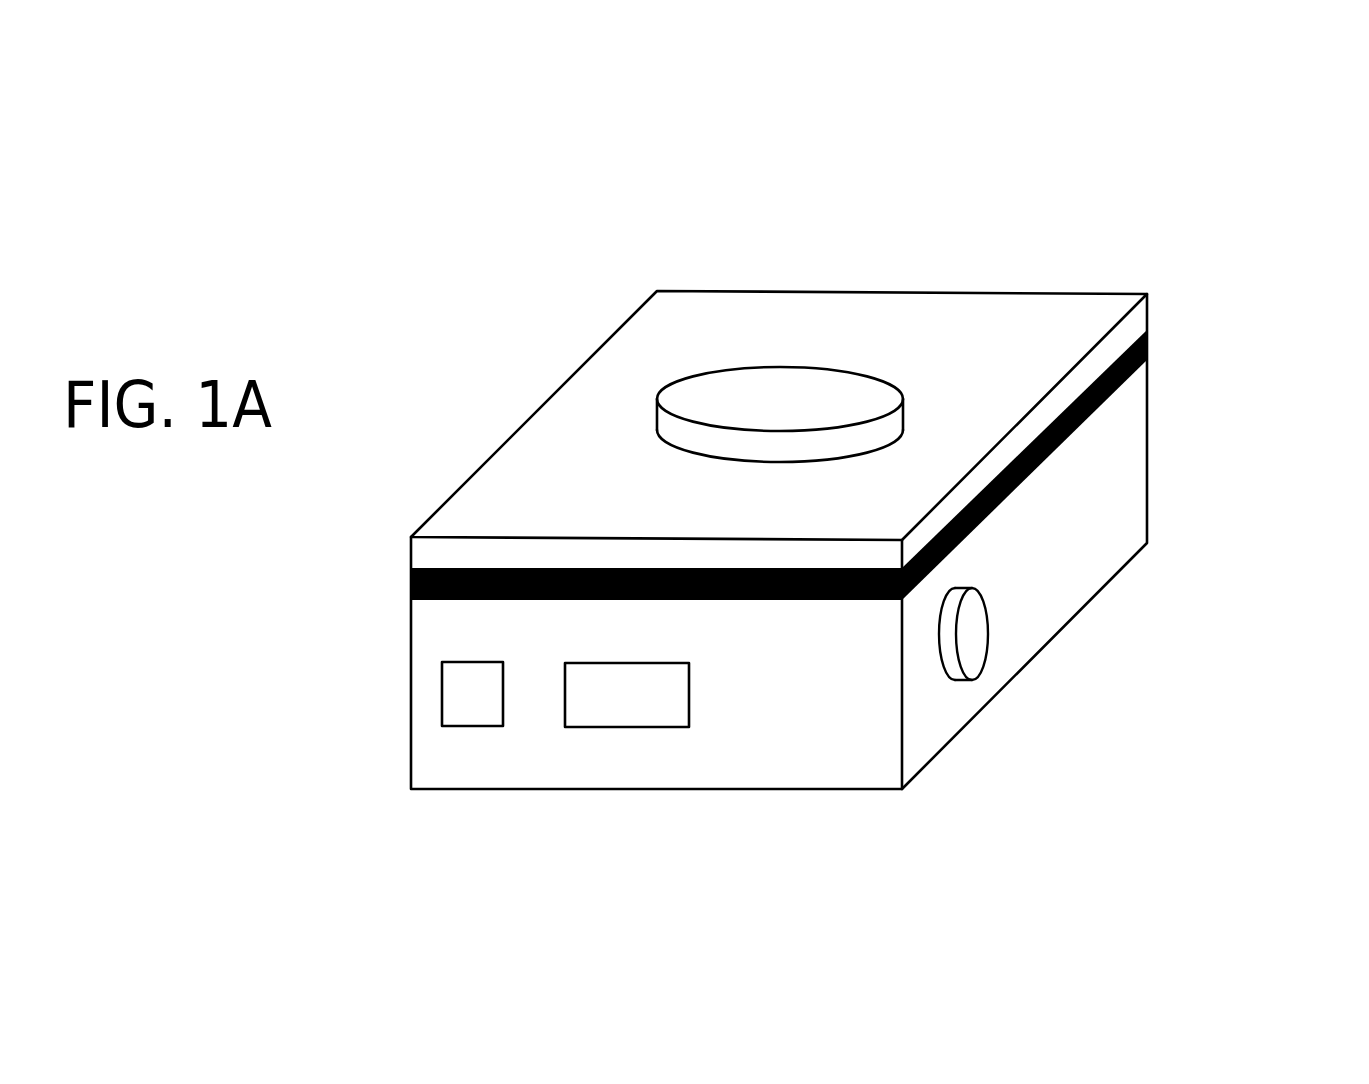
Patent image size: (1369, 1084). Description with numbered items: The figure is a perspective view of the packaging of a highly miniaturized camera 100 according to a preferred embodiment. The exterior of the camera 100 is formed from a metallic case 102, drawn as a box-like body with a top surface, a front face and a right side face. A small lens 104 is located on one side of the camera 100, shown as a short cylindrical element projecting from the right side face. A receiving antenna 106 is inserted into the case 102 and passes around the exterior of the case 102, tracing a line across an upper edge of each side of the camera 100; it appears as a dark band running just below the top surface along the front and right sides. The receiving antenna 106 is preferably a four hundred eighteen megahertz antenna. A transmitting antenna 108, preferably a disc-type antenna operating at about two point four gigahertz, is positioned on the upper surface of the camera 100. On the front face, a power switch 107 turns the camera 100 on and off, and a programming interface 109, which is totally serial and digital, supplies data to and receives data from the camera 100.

The camera 100 is at (1210, 233).
The metallic case 102 is at (1087, 512).
The lens 104 is at (972, 635).
The receiving antenna 106 is at (408, 588).
The power switch 107 is at (475, 727).
The transmitting antenna 108 is at (720, 400).
The programming interface 109 is at (658, 728).